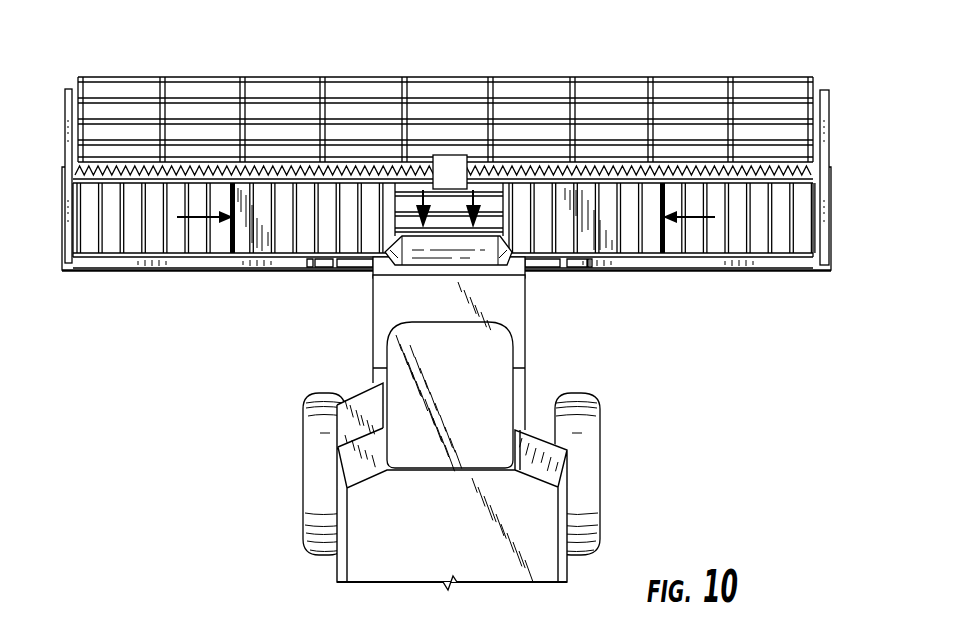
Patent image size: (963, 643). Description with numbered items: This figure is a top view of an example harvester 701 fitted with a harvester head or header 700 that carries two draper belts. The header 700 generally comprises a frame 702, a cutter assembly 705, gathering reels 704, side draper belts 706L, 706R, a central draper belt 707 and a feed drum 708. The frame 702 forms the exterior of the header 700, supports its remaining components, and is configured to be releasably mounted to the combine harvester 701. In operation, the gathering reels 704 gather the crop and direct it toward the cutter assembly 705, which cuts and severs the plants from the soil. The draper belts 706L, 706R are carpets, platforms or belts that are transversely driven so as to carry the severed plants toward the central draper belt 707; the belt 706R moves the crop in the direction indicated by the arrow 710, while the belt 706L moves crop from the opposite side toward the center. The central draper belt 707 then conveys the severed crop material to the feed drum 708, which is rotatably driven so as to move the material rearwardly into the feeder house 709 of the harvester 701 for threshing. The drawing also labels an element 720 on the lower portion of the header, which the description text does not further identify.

The harvester head 700 is at (482, 86).
The harvester 701 is at (670, 405).
The frame 702 is at (830, 142).
The gathering reels 704 is at (618, 78).
The cutter assembly 705 is at (689, 172).
The draper belt 706L is at (92, 238).
The draper belt 706R is at (803, 225).
The central draper belt 707 is at (400, 221).
The feed drum 708 is at (480, 248).
The feeder house 709 is at (372, 310).
The arrow 710 is at (693, 223).
The lower panel frame 720 is at (795, 203).